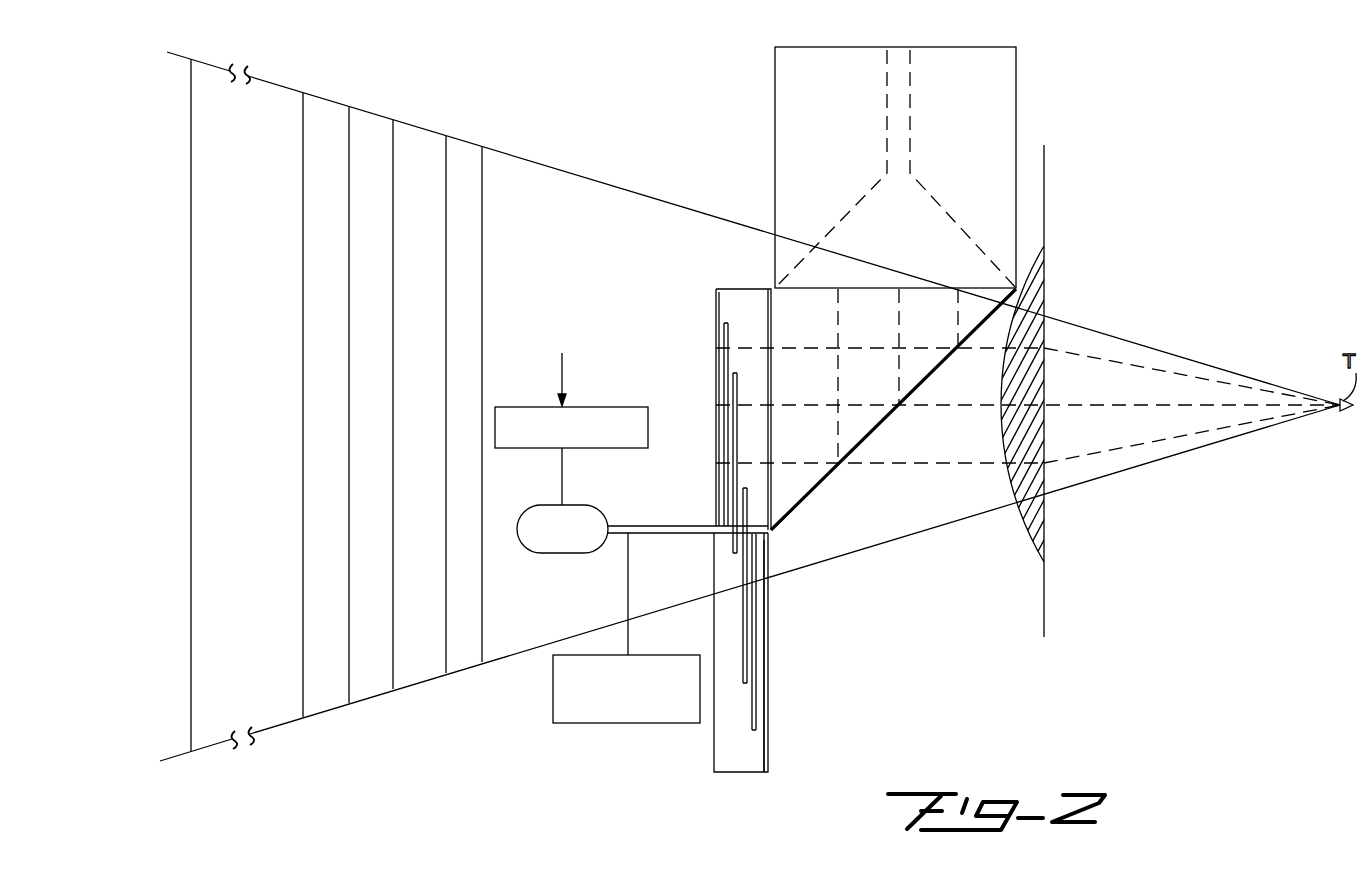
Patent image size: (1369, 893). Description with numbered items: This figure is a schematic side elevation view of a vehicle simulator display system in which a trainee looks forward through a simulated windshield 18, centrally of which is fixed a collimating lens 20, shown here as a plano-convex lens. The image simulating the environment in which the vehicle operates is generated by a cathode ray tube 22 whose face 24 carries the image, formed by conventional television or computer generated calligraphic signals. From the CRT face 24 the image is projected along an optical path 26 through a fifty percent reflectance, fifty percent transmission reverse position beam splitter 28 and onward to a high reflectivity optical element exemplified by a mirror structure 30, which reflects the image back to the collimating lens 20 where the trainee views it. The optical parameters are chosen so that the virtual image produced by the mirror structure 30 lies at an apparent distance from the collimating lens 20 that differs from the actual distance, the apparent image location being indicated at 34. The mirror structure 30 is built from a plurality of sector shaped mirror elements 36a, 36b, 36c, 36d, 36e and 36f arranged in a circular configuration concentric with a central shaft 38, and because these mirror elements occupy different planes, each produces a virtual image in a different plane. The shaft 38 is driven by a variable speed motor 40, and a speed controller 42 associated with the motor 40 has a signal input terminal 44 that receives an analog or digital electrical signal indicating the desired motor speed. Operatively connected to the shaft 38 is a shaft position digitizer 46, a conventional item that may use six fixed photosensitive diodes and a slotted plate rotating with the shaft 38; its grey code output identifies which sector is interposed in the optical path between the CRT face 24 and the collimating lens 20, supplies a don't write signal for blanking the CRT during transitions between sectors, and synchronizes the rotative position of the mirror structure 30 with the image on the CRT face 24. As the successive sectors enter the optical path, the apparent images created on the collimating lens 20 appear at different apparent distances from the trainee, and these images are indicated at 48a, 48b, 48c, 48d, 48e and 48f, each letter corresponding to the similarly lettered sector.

The simulated windshield 18 is at (1046, 219).
The collimating lens 20 is at (1046, 279).
The cathode ray tube 22 is at (930, 197).
The CRT face 24 is at (880, 291).
The optical path 26 is at (896, 366).
The beam splitter 28 is at (813, 493).
The mirror structure 30 is at (772, 546).
The apparent image location 34 is at (375, 115).
The sector shaped mirror element 36a is at (771, 737).
The sector shaped mirror element 36b is at (756, 698).
The sector shaped mirror element 36c is at (743, 574).
The sector shaped mirror element 36d is at (737, 384).
The sector shaped mirror element 36e is at (724, 333).
The sector shaped mirror element 36f is at (716, 305).
The central shaft 38 is at (666, 524).
The variable speed motor 40 is at (553, 553).
The speed controller 42 is at (614, 408).
The signal input terminal 44 is at (565, 376).
The shaft position digitizer 46 is at (553, 683).
The apparent image 48a is at (482, 310).
The apparent image 48b is at (446, 340).
The apparent image 48c is at (393, 449).
The apparent image 48d is at (349, 574).
The apparent image 48e is at (303, 617).
The apparent image 48f is at (191, 649).